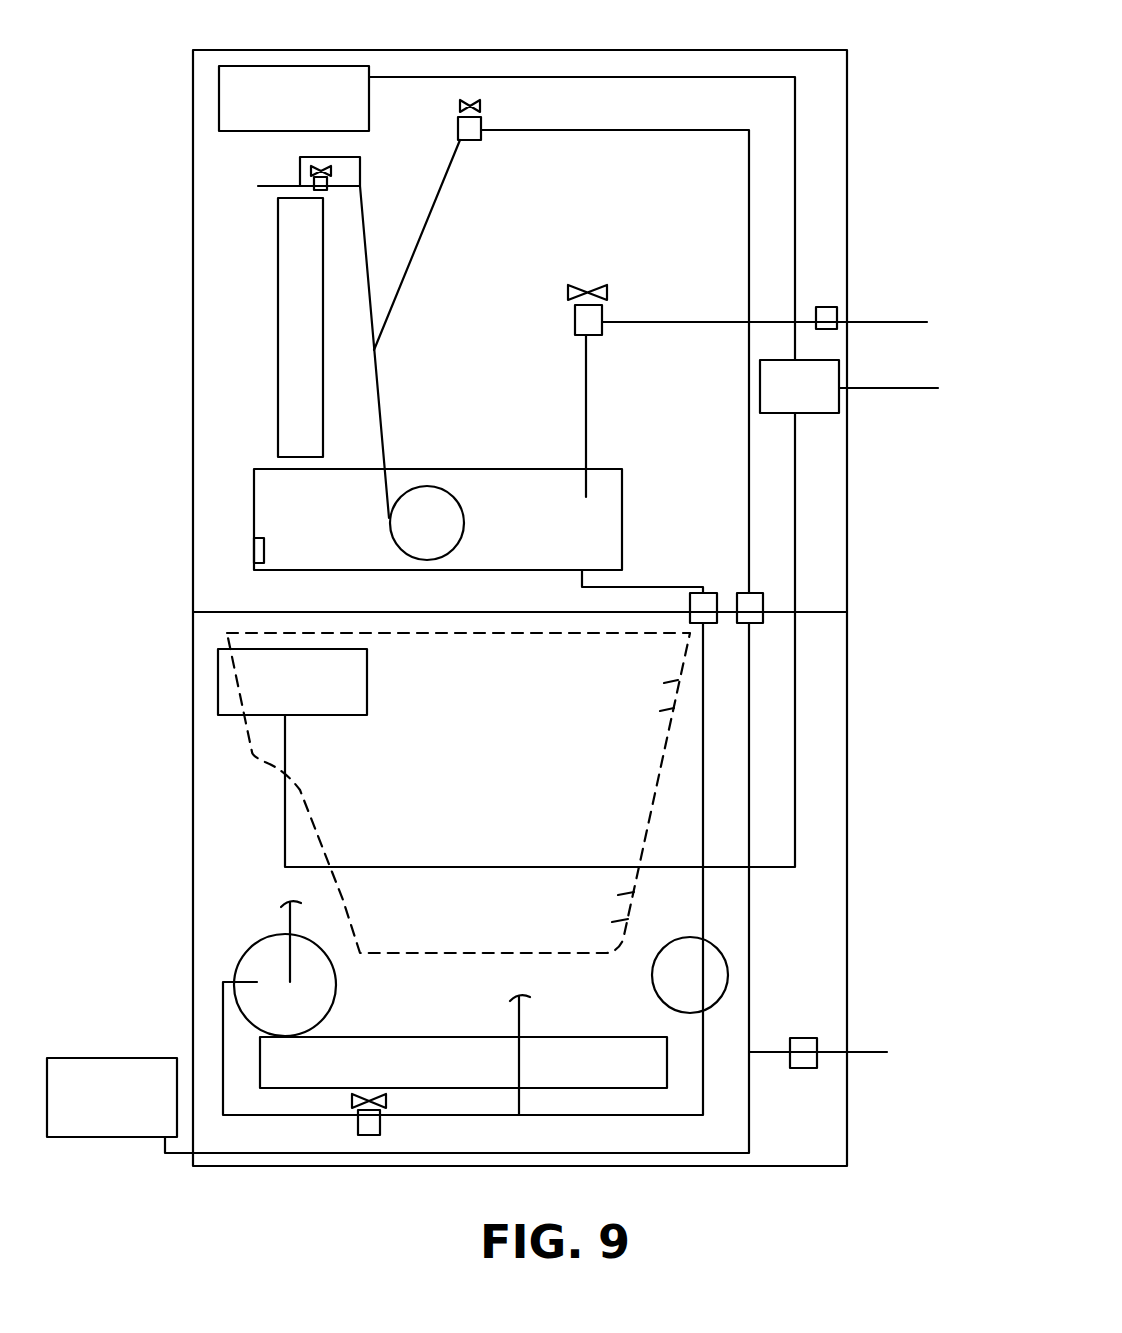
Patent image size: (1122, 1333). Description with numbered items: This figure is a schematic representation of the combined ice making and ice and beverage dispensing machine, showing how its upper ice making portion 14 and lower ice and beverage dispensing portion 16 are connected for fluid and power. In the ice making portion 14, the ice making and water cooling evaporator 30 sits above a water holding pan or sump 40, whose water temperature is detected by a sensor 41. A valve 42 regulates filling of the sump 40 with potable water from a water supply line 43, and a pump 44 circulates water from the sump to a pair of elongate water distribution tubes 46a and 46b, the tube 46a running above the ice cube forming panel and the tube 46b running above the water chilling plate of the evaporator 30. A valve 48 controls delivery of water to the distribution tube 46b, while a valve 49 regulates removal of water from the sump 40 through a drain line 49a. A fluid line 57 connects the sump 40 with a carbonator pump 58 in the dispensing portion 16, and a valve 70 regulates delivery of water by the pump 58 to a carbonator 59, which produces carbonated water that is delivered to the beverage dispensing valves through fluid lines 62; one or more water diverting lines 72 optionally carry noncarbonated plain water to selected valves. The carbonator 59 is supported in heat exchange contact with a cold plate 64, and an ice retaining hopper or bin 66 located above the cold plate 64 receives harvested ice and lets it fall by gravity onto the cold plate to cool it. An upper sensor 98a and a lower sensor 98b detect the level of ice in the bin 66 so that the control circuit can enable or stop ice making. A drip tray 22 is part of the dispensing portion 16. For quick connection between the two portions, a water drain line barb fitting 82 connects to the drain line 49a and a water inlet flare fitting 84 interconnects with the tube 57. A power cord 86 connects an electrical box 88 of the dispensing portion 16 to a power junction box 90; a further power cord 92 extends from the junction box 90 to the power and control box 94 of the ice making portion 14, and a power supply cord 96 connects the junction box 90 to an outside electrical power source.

The upper ice making portion 14 is at (180, 250).
The lower ice and beverage dispensing portion 16 is at (180, 855).
The drip tray 22 is at (112, 1097).
The ice making and water cooling evaporator 30 is at (295, 310).
The water holding pan or sump 40 is at (254, 490).
The sensor 41 is at (264, 548).
The valve 42 is at (575, 322).
The water supply line 43 is at (700, 321).
The pump 44 is at (427, 523).
The water distribution tube 46a is at (258, 186).
The water distribution tube 46b is at (330, 186).
The valve 48 is at (345, 180).
The valve 49 is at (472, 140).
The drain line 49a is at (562, 130).
The fluid line 57 is at (653, 587).
The carbonator pump 58 is at (690, 975).
The carbonator 59 is at (285, 985).
The fluid lines 62 is at (293, 922).
The cold plate 64 is at (463, 1062).
The ice retaining hopper or bin 66 is at (250, 752).
The valve 70 is at (364, 1135).
The water diverting lines 72 is at (521, 1013).
The water drain line barb fitting 82 is at (708, 593).
The water inlet flare fitting 84 is at (757, 593).
The power cord 86 is at (795, 688).
The electrical box 88 is at (292, 682).
The power junction box 90 is at (799, 386).
The power cord 92 is at (582, 77).
The power and control box 94 is at (294, 98).
The power supply cord 96 is at (882, 388).
The upper sensor 98a is at (668, 690).
The lower sensor 98b is at (618, 912).